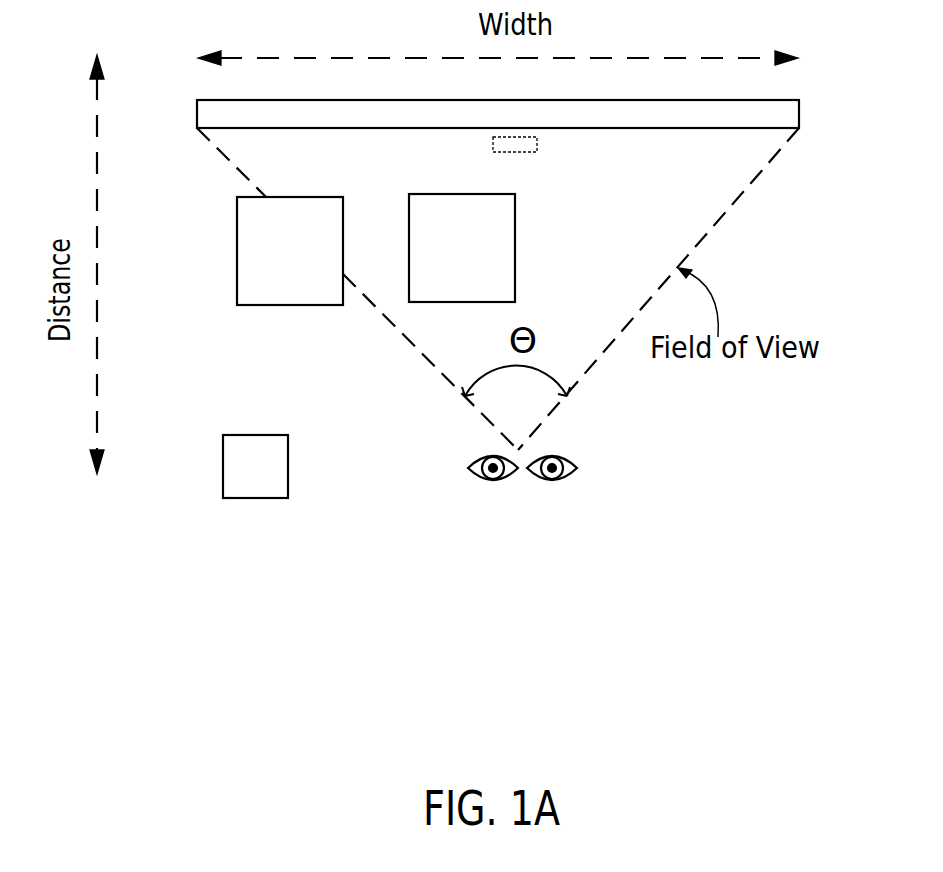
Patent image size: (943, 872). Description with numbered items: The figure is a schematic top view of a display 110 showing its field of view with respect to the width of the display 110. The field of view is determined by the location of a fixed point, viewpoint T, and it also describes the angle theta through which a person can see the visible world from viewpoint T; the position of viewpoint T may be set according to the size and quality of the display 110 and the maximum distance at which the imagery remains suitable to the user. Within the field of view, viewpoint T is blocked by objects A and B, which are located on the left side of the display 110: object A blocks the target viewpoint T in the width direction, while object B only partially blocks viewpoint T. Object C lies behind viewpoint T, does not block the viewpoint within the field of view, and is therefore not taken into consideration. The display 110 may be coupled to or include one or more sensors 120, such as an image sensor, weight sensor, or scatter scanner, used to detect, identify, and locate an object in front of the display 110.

The display 110 is at (197, 118).
The sensor 120 is at (539, 141).
The object A is at (462, 248).
The object B is at (290, 251).
The object C is at (255, 466).
The viewpoint T is at (586, 465).